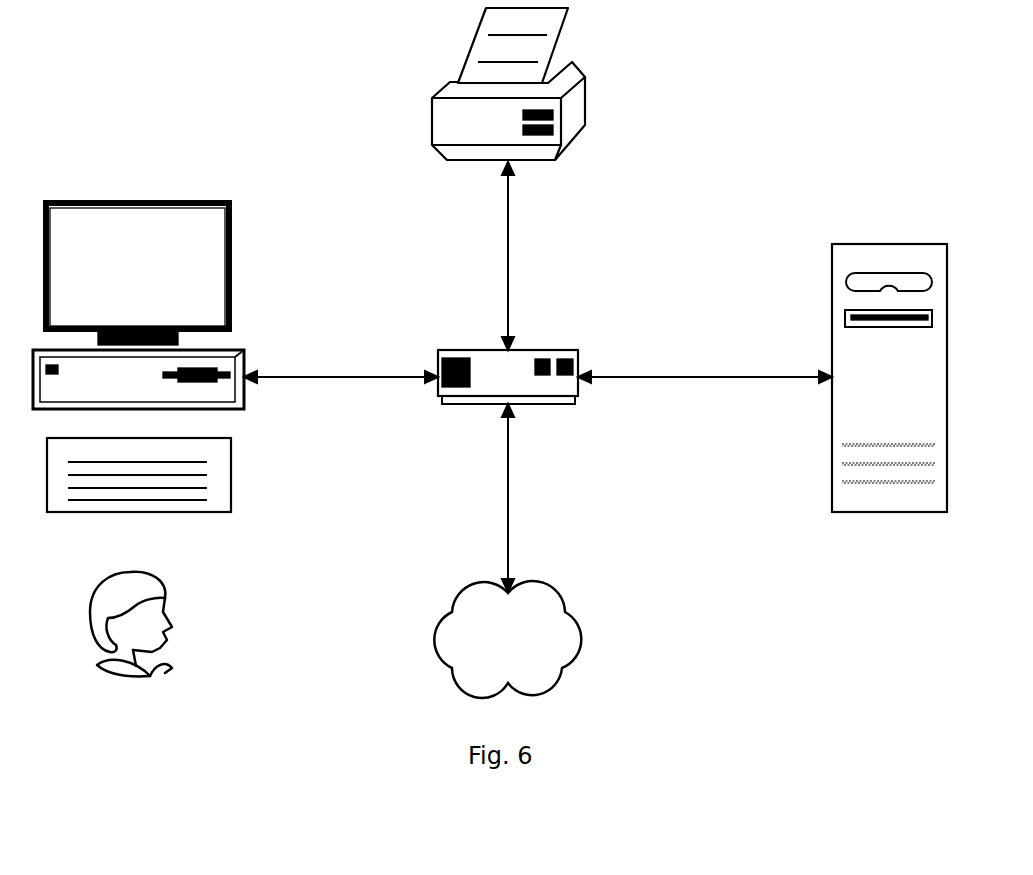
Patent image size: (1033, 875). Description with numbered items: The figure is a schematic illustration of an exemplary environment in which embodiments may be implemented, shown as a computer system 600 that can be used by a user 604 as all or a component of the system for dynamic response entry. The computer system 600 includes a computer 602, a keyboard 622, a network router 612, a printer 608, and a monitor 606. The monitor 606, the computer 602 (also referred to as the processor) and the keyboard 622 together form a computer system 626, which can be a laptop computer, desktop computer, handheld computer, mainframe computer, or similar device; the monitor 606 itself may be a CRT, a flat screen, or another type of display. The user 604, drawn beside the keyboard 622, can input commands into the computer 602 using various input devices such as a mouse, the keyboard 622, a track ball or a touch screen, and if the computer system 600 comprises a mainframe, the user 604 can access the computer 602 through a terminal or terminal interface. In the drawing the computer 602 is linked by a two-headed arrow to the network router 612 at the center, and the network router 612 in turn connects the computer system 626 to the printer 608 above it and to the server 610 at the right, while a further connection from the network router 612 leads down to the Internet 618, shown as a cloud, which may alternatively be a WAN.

The computer system 600 is at (809, 94).
The computer 602 is at (244, 352).
The user 604 is at (156, 582).
The monitor 606 is at (232, 202).
The printer 608 is at (432, 133).
The server 610 is at (832, 490).
The network router 612 is at (535, 350).
The Internet 618 is at (545, 585).
The keyboard 622 is at (232, 475).
The computer system 626 is at (236, 262).